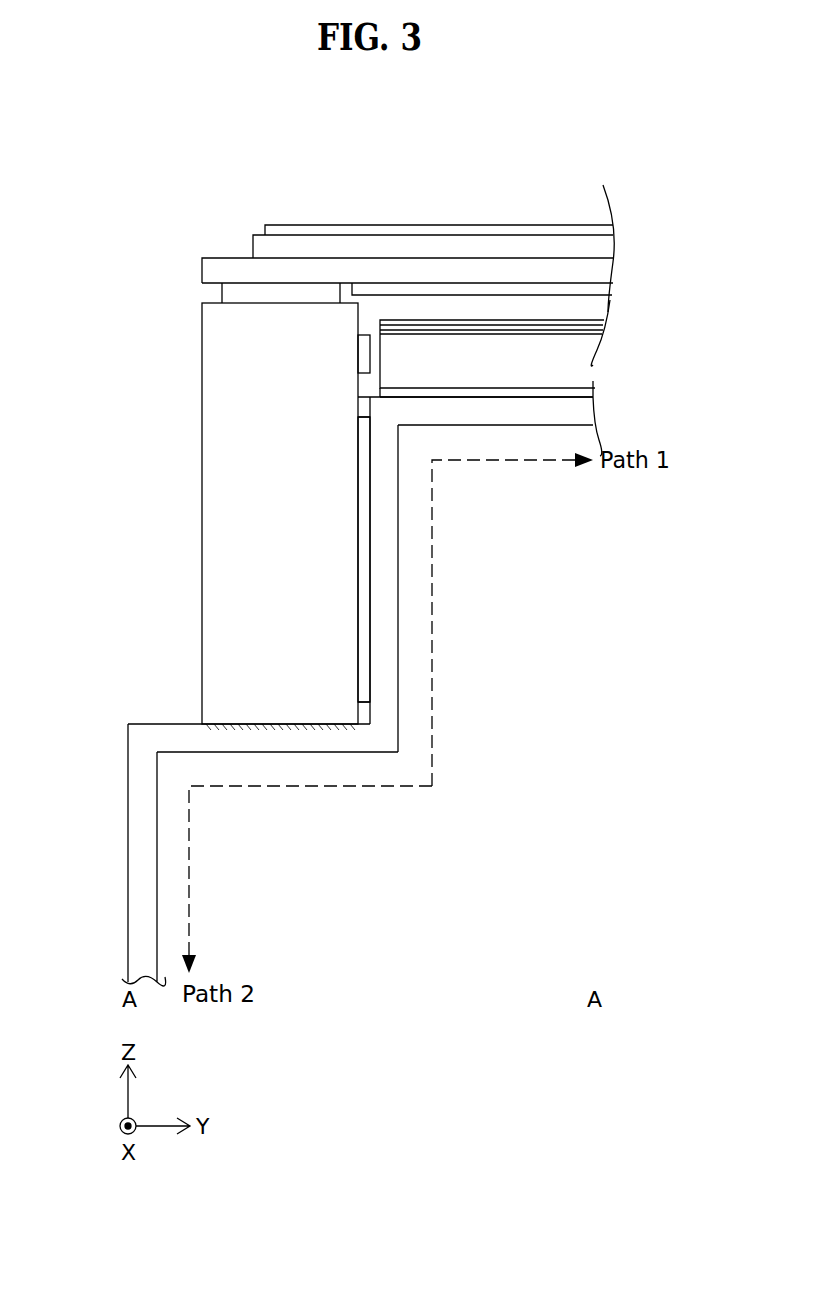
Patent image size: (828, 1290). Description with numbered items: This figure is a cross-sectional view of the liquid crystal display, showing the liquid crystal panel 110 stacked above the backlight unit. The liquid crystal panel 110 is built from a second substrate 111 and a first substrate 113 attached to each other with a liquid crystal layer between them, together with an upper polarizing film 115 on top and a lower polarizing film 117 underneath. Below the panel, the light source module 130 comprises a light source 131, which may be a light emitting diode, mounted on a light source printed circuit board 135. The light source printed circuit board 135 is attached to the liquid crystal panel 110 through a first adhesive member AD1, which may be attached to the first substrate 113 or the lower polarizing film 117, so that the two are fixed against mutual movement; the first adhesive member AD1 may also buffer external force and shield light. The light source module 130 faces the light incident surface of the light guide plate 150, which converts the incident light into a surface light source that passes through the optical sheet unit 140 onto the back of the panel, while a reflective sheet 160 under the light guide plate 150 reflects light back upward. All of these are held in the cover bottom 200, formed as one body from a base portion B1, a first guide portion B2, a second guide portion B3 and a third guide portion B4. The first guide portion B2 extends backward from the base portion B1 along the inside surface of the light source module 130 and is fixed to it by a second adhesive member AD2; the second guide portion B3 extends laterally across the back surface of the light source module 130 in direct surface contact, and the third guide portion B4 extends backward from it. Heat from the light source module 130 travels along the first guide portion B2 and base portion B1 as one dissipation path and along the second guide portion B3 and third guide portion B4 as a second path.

The liquid crystal panel 110 is at (535, 159).
The second substrate 111 is at (375, 246).
The first substrate 113 is at (445, 272).
The upper polarizing film 115 is at (304, 231).
The lower polarizing film 117 is at (515, 292).
The first adhesive member AD1 is at (233, 293).
The light source module 130 is at (127, 348).
The light source 131 is at (362, 356).
The light source printed circuit board 135 is at (212, 396).
The optical sheet unit 140 is at (583, 326).
The light guide plate 150 is at (583, 363).
The reflective sheet 160 is at (583, 390).
The cover bottom 200 is at (583, 412).
The second adhesive member AD2 is at (365, 594).
The base portion B1 is at (538, 413).
The first guide portion B2 is at (387, 620).
The second guide portion B3 is at (318, 742).
The third guide portion B4 is at (138, 855).